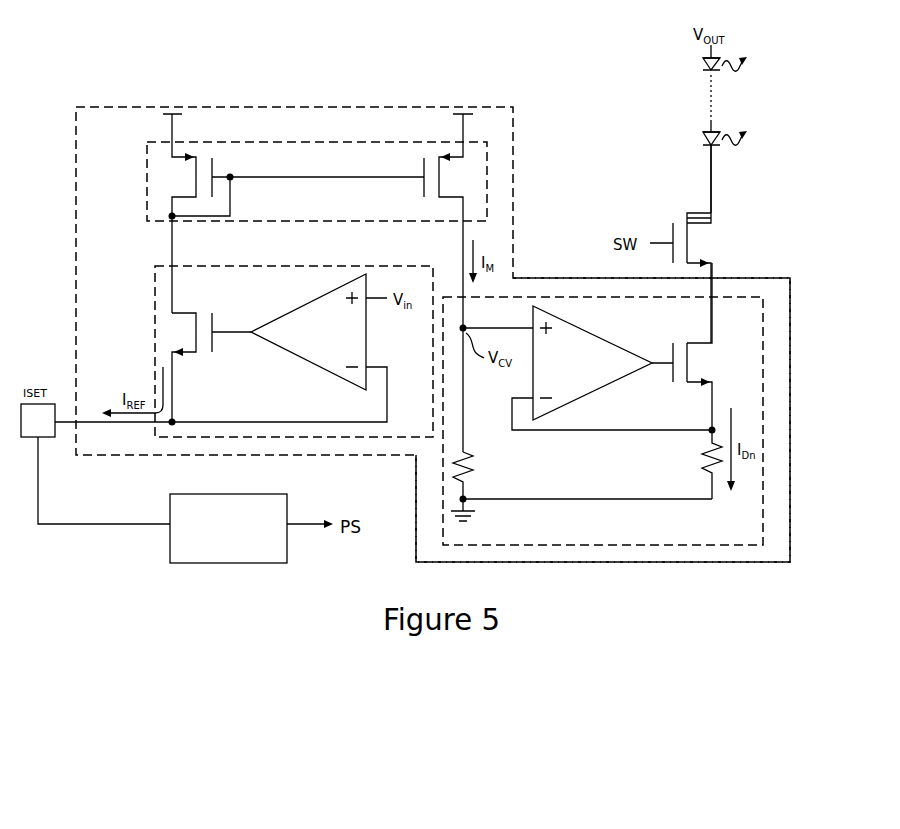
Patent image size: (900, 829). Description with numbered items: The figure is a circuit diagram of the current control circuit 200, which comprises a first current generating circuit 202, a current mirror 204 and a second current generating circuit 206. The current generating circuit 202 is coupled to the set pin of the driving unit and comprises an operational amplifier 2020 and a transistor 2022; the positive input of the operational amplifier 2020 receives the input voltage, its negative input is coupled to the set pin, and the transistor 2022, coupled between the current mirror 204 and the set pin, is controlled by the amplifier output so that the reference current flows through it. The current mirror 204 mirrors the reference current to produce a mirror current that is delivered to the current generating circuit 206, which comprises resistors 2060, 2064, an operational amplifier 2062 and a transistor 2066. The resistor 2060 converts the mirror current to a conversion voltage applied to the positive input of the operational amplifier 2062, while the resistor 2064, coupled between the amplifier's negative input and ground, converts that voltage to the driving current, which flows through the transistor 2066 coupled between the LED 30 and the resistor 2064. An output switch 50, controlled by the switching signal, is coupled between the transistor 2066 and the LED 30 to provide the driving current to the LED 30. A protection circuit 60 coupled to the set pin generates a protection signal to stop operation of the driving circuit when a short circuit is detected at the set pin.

The current control circuit 200 is at (790, 318).
The current generating circuit 202 is at (155, 318).
The current mirror 204 is at (487, 158).
The current generating circuit 206 is at (763, 377).
The operational amplifier 2020 is at (366, 288).
The transistor 2022 is at (212, 320).
The resistor 2060 is at (470, 478).
The operational amplifier 2062 is at (600, 338).
The resistor 2064 is at (702, 475).
The transistor 2066 is at (667, 377).
The LED 30 is at (714, 128).
The output switch 50 is at (687, 248).
The protection circuit 60 is at (287, 508).